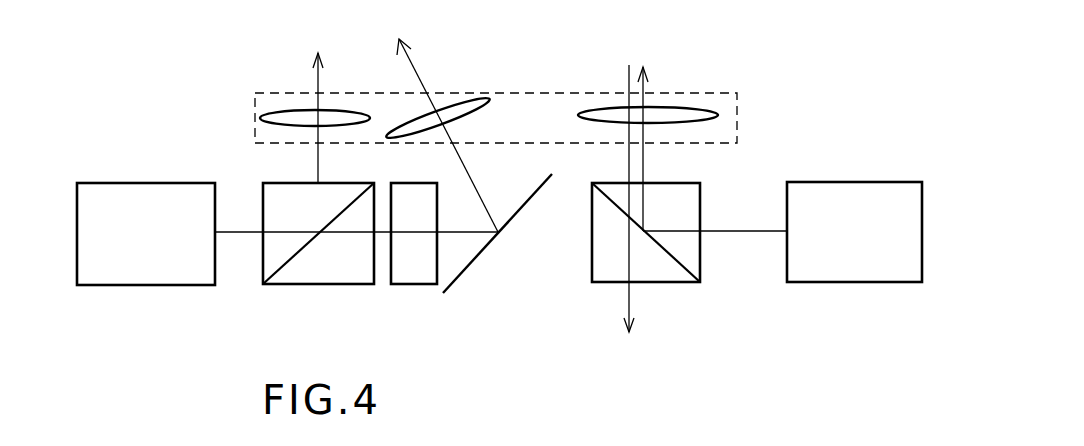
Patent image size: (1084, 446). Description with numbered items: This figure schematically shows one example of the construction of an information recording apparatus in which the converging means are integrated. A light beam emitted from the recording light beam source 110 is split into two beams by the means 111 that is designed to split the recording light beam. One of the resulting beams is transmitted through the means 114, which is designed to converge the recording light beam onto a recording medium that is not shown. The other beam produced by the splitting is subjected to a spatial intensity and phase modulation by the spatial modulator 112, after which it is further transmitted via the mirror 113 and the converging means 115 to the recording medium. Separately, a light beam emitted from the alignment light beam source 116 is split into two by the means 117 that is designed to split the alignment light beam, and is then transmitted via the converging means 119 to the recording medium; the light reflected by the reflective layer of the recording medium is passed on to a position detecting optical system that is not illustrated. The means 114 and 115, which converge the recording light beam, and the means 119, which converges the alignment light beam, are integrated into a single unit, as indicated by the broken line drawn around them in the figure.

The recording light beam source 110 is at (183, 285).
The means for splitting the recording light beam 111 is at (345, 284).
The spatial modulator 112 is at (415, 284).
The mirror 113 is at (485, 250).
The means for converging the recording light beam 114 is at (259, 120).
The converging means 115 is at (488, 104).
The alignment light beam source 116 is at (858, 282).
The means for splitting the alignment light beam 117 is at (597, 282).
The converging means for the alignment light beam 119 is at (717, 113).